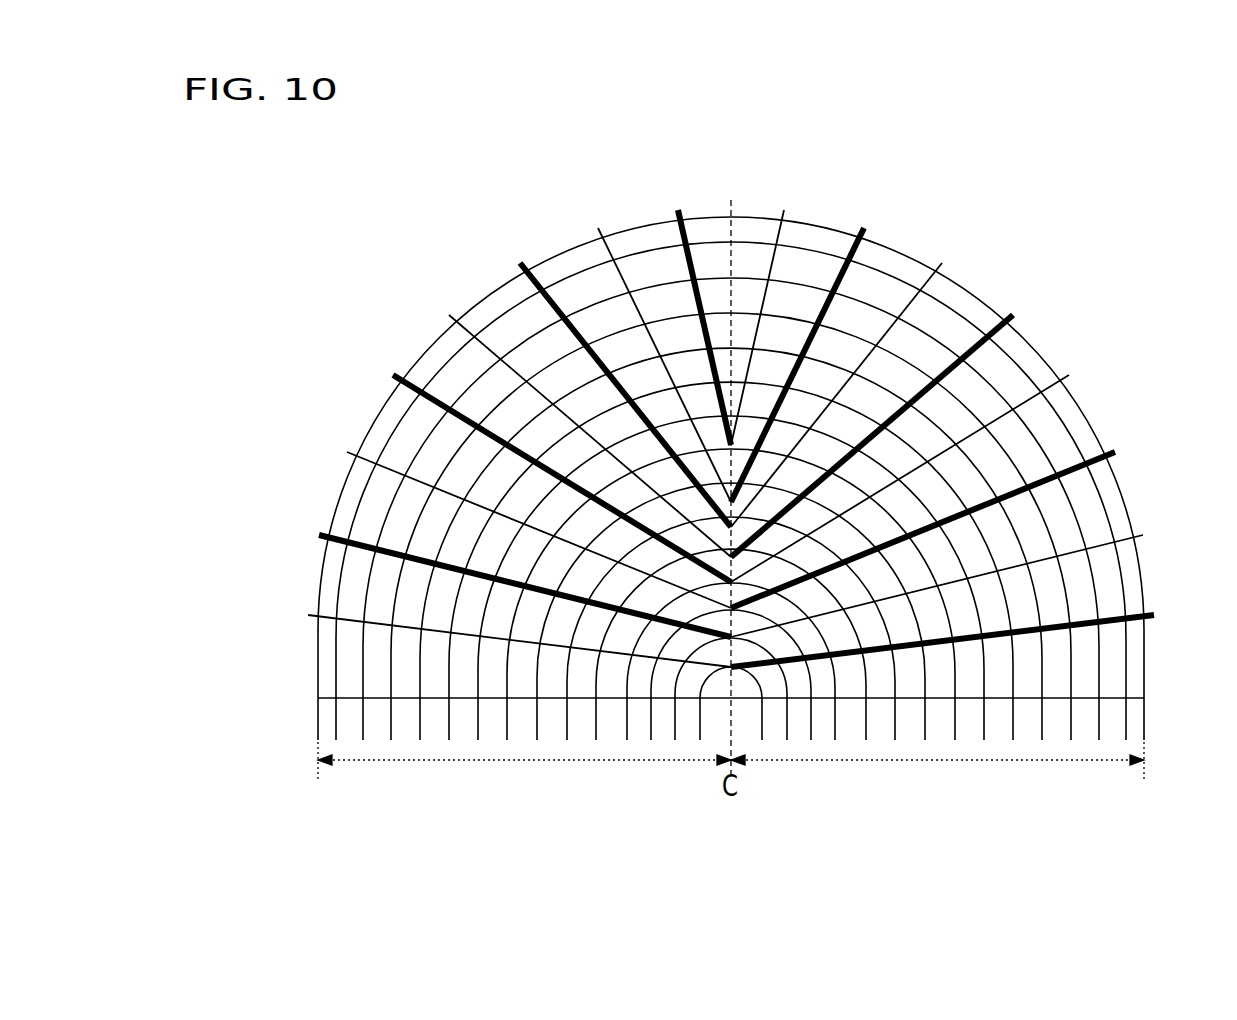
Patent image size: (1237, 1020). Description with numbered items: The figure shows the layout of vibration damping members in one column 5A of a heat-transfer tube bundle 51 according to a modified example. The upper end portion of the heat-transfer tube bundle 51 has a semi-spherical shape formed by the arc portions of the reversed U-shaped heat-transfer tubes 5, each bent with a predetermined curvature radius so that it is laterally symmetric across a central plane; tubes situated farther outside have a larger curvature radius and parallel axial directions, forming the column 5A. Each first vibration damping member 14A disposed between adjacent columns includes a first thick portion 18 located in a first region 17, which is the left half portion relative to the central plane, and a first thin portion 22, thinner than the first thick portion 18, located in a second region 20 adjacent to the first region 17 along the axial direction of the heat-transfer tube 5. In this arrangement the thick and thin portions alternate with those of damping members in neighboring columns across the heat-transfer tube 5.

The heat-transfer tube 5 is at (1093, 612).
The column 5A is at (1027, 222).
The first vibration damping member 14A is at (676, 200).
The first region 17 is at (524, 770).
The first thick portion 18 is at (734, 398).
The second region 20 is at (937, 770).
The first thin portion 22 is at (786, 210).
The heat-transfer tube bundle 51 is at (284, 699).